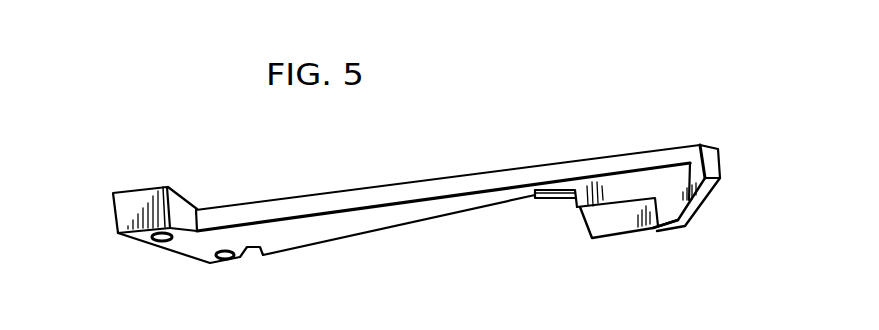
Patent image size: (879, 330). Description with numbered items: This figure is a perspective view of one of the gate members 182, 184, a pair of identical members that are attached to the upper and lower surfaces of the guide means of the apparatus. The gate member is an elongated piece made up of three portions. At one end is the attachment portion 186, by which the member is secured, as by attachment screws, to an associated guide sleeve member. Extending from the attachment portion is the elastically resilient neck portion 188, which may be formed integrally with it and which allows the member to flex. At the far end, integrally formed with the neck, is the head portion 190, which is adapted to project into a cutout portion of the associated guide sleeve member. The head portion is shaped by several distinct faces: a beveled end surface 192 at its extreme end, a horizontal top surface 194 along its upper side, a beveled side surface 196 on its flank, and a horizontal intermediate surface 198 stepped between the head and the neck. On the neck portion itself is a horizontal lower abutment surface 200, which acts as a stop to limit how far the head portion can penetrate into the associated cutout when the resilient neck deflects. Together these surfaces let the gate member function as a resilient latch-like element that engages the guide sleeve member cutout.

The gate member 182 is at (419, 194).
The gate member 184 is at (433, 179).
The attachment portion 186 is at (123, 212).
The elastically resilient neck portion 188 is at (284, 201).
The head portion 190 is at (668, 178).
The beveled end surface 192 is at (698, 203).
The horizontal top surface 194 is at (647, 230).
The beveled side surface 196 is at (607, 228).
The horizontal intermediate surface 198 is at (587, 214).
The horizontal lower abutment surface 200 is at (545, 203).